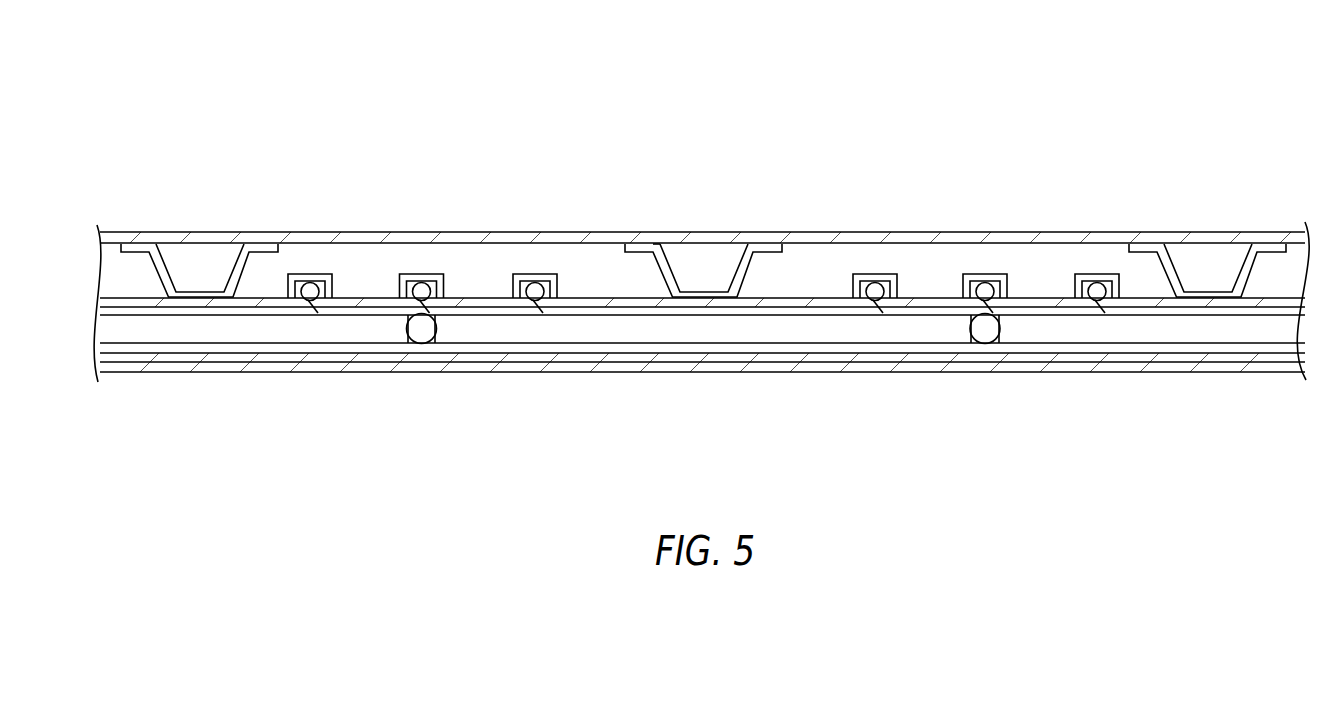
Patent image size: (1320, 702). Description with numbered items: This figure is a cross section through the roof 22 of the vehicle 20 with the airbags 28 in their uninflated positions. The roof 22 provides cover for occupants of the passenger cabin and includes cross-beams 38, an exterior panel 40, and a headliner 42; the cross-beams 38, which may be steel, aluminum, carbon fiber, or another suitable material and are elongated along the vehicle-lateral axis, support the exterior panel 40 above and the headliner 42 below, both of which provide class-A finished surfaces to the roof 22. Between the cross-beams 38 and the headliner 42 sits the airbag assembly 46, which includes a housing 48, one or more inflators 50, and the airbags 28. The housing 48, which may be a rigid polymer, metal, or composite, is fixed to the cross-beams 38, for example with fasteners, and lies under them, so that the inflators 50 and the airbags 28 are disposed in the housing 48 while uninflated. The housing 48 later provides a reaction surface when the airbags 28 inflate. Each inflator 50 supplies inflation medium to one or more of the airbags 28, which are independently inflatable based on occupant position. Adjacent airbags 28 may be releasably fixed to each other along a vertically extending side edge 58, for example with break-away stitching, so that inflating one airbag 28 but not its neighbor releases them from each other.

The vehicle 20 is at (254, 98).
The roof 22 is at (527, 232).
The airbags 28 is at (252, 332).
The cross-beams 38 is at (242, 272).
The exterior panel 40 is at (658, 244).
The headliner 42 is at (670, 373).
The airbag assembly 46 is at (930, 266).
The housing 48 is at (590, 299).
The inflators 50 is at (875, 291).
The vertically extending side edge 58 is at (533, 291).